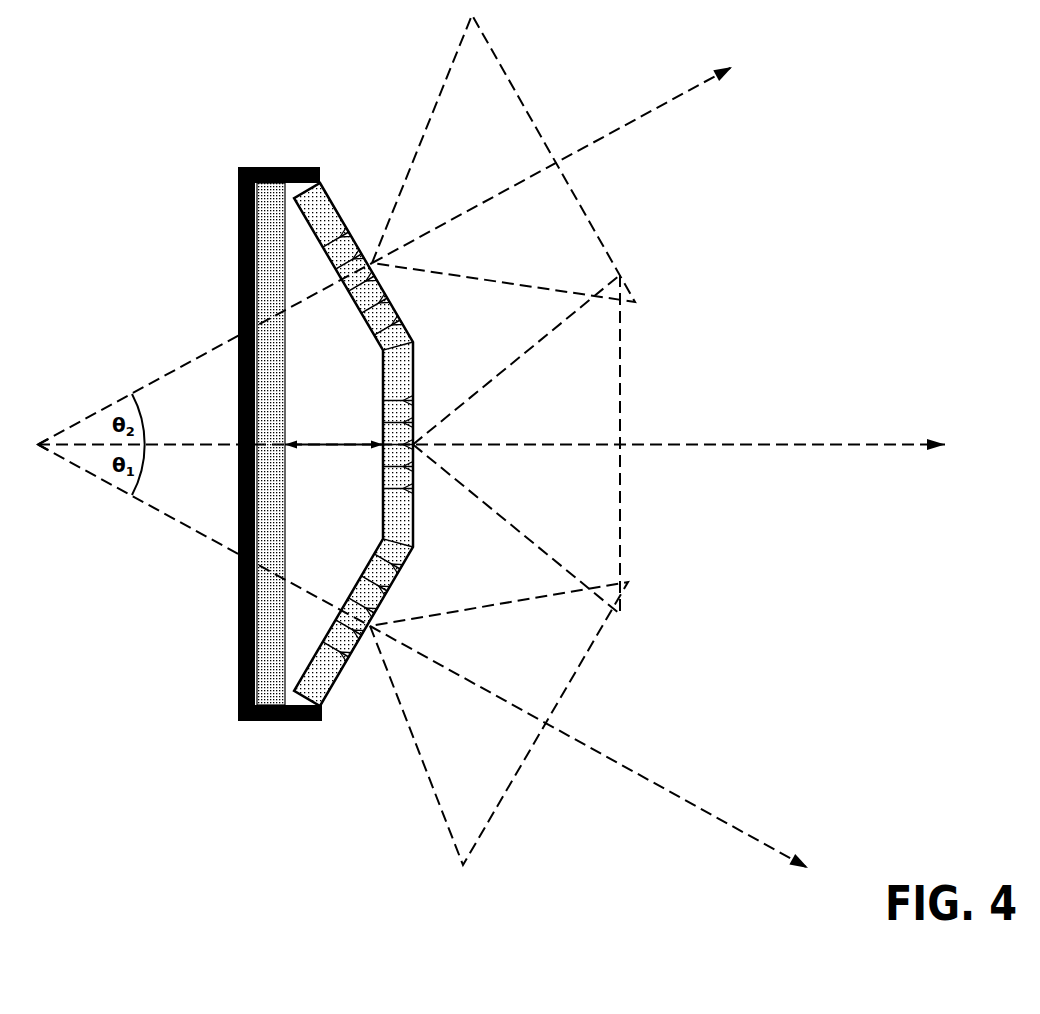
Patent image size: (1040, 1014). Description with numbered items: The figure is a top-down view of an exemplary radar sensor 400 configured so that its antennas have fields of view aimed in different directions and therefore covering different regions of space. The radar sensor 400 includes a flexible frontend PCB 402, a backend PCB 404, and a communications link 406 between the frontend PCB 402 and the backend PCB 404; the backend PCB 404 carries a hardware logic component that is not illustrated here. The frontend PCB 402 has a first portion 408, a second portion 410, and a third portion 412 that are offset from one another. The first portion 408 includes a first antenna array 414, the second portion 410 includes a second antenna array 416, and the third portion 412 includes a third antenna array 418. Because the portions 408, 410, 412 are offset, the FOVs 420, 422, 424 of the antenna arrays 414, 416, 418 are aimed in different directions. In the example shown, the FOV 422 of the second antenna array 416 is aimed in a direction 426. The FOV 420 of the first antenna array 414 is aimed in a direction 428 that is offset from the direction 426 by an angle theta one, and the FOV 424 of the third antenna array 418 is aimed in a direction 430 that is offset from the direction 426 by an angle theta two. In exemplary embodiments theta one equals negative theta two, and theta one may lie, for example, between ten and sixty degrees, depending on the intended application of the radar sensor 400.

The radar sensor 400 is at (165, 118).
The flexible frontend PCB 402 is at (400, 380).
The backend PCB 404 is at (273, 273).
The communications link 406 is at (349, 443).
The first portion 408 is at (378, 553).
The second portion 410 is at (387, 507).
The third portion 412 is at (380, 336).
The first antenna array 414 is at (347, 665).
The second antenna array 416 is at (408, 497).
The third antenna array 418 is at (348, 232).
The FOV of the first antenna array 420 is at (447, 825).
The FOV of the second antenna array 422 is at (620, 368).
The FOV of the third antenna array 424 is at (495, 60).
The direction 426 is at (777, 442).
The direction 428 is at (670, 790).
The direction 430 is at (670, 101).